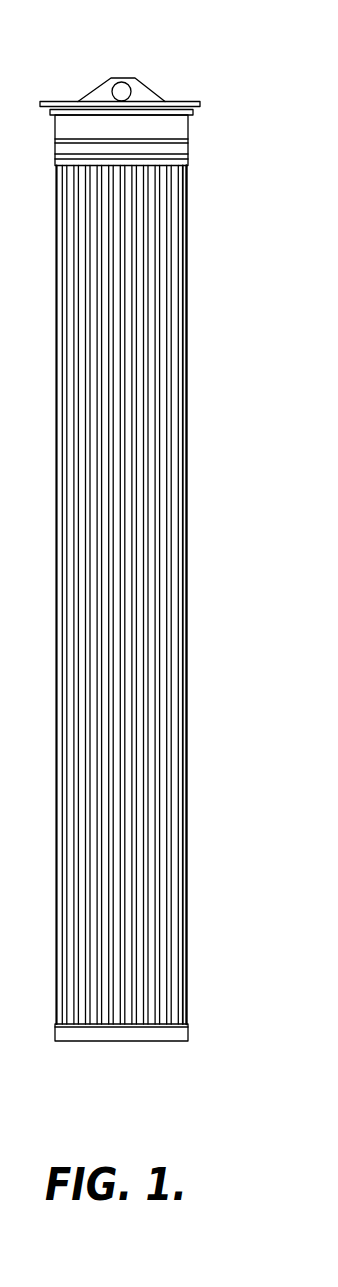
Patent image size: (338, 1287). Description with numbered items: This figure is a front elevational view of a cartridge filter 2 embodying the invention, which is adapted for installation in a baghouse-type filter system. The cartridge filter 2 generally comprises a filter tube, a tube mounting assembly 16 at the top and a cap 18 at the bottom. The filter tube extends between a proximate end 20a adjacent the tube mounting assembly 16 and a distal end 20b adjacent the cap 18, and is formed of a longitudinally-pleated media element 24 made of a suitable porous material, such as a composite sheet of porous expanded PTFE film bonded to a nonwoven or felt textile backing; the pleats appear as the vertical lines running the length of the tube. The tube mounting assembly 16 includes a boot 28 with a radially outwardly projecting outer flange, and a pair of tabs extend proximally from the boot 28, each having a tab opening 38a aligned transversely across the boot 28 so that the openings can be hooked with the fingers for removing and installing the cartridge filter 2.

The cartridge filter 2 is at (224, 63).
The tube mounting assembly 16 is at (200, 102).
The cap 18 is at (188, 1042).
The proximate end 20a is at (182, 163).
The distal end 20b is at (188, 1030).
The longitudinally-pleated media element 24 is at (187, 303).
The boot 28 is at (43, 102).
The tab opening 38a is at (128, 102).